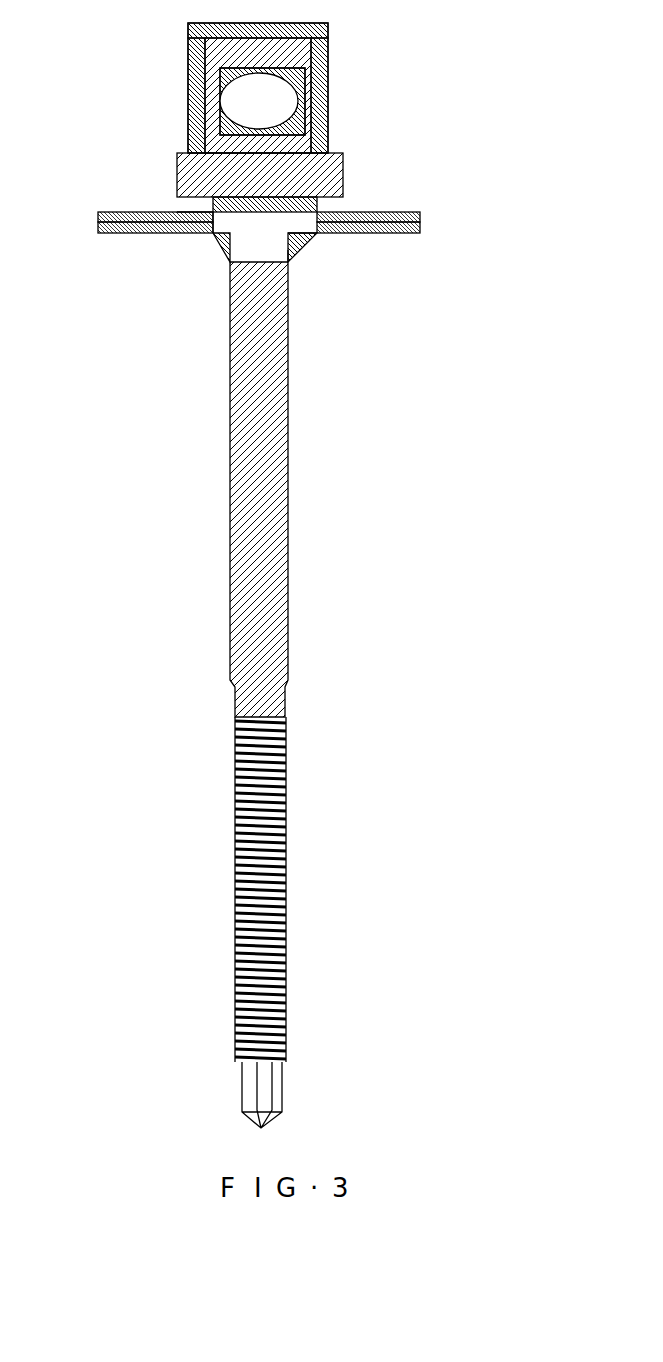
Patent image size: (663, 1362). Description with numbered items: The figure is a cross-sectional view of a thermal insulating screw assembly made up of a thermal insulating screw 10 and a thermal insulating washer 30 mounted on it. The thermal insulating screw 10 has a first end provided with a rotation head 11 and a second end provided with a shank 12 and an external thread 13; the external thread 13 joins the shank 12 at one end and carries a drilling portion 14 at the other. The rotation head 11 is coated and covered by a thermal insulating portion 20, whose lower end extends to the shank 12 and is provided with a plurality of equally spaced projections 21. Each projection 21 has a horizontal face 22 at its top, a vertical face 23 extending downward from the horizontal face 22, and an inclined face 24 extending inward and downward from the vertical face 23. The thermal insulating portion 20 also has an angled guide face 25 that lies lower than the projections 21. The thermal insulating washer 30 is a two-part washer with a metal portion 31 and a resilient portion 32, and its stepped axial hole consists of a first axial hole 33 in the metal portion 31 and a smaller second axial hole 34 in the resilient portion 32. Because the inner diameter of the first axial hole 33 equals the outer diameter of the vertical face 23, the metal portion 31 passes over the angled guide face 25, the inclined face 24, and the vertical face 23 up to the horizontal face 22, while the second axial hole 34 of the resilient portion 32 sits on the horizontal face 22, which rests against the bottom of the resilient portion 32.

The thermal insulating screw 10 is at (169, 504).
The rotation head 11 is at (408, 35).
The shank 12 is at (352, 820).
The external thread 13 is at (287, 925).
The drilling portion 14 is at (283, 1090).
The thermal insulating portion 20 is at (190, 60).
The projections 21 is at (217, 271).
The horizontal face 22 is at (322, 208).
The vertical face 23 is at (303, 237).
The inclined face 24 is at (300, 248).
The angled guide face 25 is at (289, 255).
The thermal insulating washer 30 is at (285, 226).
The metal portion 31 is at (113, 213).
The resilient portion 32 is at (122, 230).
The first axial hole 33 is at (178, 209).
The second axial hole 34 is at (212, 226).